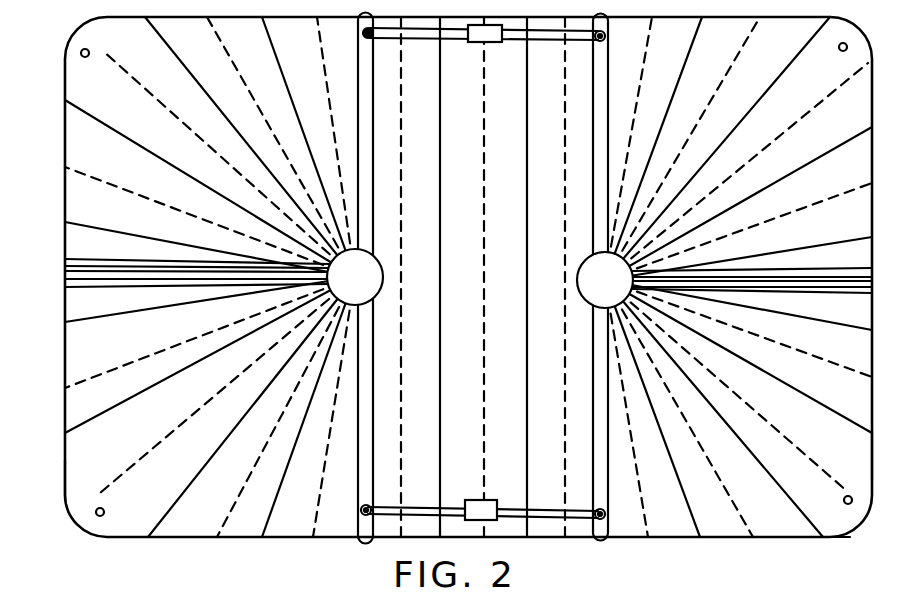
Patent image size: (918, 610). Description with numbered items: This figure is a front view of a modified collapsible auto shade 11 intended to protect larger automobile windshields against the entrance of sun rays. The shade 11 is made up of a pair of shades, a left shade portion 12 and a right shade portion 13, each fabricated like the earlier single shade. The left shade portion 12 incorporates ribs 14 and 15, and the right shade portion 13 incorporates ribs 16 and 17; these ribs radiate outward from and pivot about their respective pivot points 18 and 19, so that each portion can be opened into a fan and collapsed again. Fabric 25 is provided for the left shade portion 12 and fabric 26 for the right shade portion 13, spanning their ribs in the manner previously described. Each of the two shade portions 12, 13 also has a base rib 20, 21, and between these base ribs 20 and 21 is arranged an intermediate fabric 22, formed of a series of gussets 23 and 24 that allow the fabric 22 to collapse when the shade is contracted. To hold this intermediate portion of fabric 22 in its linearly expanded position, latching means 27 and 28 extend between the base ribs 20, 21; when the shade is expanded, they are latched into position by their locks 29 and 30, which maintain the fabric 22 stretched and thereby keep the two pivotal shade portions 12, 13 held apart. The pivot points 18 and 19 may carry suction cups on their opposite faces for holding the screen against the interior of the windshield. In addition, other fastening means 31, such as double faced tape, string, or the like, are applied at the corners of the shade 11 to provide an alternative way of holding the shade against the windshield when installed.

The shade 11 is at (58, 244).
The left shade portion 12 is at (65, 480).
The right shade portion 13 is at (875, 456).
The rib 14 is at (122, 261).
The rib 15 is at (122, 282).
The rib 16 is at (808, 275).
The rib 17 is at (809, 291).
The pivot point 18 is at (367, 289).
The pivot point 19 is at (617, 292).
The base rib 20 is at (366, 357).
The base rib 21 is at (600, 352).
The fabric 22 is at (552, 527).
The gusset 23 is at (527, 297).
The gusset 24 is at (484, 376).
The fabric 25 is at (138, 514).
The fabric 26 is at (836, 518).
The latching means 27 is at (510, 41).
The latching means 28 is at (435, 507).
The lock 29 is at (476, 42).
The lock 30 is at (516, 494).
The fastening means 31 is at (83, 48).